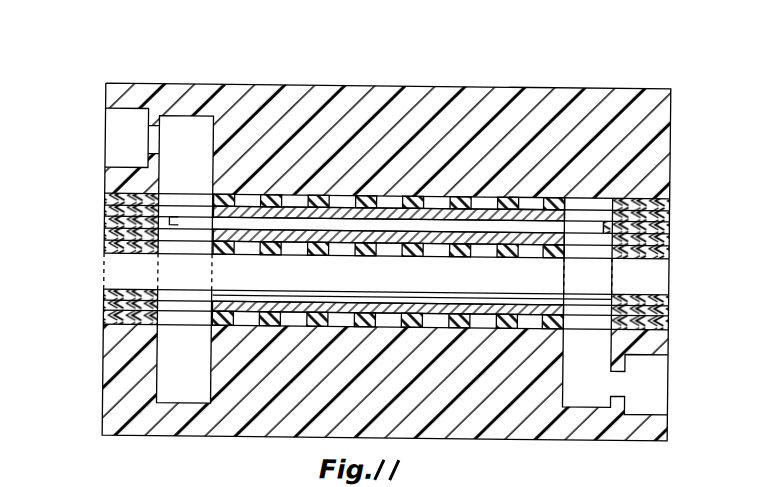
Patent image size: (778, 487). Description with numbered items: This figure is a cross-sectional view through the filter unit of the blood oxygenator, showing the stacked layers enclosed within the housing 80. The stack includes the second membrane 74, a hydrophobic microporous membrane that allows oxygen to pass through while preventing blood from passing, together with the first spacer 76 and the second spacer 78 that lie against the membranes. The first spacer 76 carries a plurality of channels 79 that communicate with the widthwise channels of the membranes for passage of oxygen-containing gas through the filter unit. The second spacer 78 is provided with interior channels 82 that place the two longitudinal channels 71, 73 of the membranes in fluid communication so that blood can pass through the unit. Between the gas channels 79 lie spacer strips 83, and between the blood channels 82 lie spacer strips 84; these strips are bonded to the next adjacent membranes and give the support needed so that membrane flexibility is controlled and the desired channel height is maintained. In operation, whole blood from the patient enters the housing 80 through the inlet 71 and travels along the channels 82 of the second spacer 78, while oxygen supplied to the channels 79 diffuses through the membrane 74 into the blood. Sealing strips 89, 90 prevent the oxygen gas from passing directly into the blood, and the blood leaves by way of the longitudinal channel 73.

The longitudinal channel 71 is at (211, 147).
The longitudinal channel 73 is at (566, 388).
The second membrane 74 is at (104, 212).
The first spacer 76 is at (104, 199).
The second spacer 78 is at (105, 220).
The channels 79 is at (335, 196).
The housing 80 is at (611, 104).
The interior channels 82 is at (177, 264).
The spacer strips 83 is at (508, 196).
The spacer strips 84 is at (327, 227).
The sealing strip 89 is at (560, 196).
The sealing strip 90 is at (226, 196).